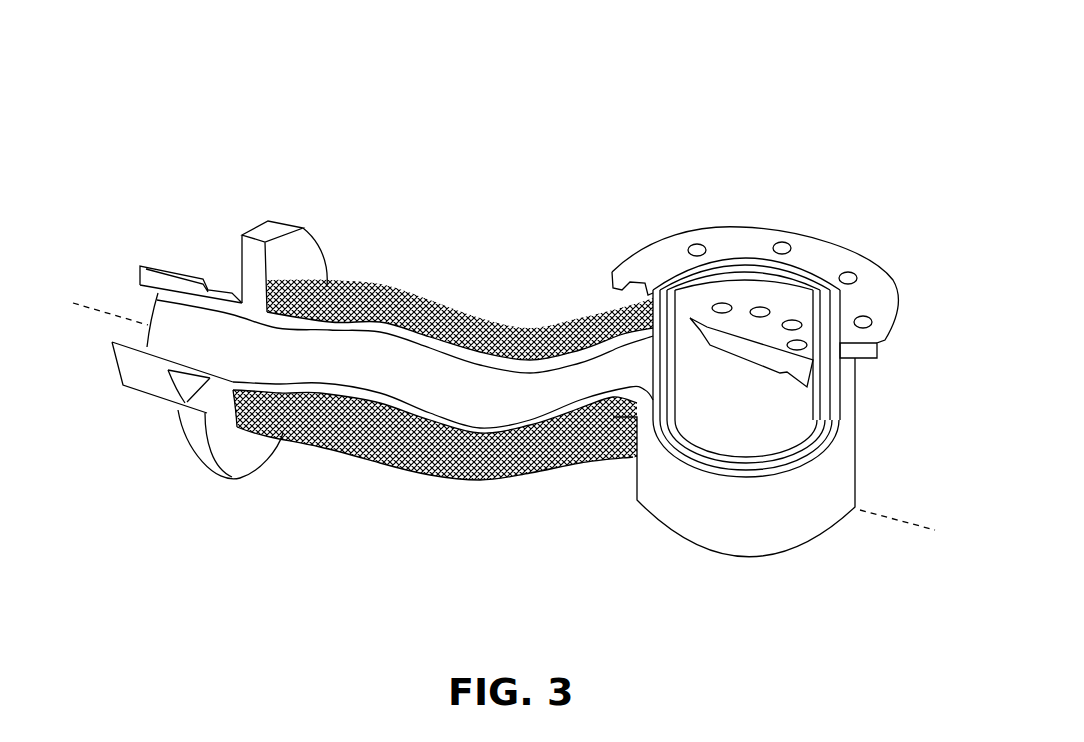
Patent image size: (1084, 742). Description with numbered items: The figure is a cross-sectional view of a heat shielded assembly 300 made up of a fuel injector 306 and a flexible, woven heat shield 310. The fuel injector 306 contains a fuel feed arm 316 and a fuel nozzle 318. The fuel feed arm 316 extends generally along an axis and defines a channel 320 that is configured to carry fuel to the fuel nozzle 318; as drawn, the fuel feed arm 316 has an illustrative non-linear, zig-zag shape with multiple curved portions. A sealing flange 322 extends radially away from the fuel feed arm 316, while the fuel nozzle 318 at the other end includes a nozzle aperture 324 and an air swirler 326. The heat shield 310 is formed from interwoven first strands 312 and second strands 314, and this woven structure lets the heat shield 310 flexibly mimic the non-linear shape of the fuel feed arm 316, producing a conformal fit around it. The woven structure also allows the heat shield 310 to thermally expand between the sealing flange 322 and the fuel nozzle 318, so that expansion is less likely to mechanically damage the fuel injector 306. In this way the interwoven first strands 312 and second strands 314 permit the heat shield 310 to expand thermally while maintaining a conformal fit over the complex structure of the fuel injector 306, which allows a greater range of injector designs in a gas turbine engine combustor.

The heat shielded assembly 300 is at (660, 88).
The fuel injector 306 is at (145, 420).
The heat shield 310 is at (370, 518).
The first strands 312 is at (348, 452).
The second strands 314 is at (495, 470).
The fuel feed arm 316 is at (170, 270).
The fuel nozzle 318 is at (713, 520).
The channel 320 is at (455, 386).
The sealing flange 322 is at (263, 230).
The nozzle aperture 324 is at (883, 332).
The air swirler 326 is at (797, 277).